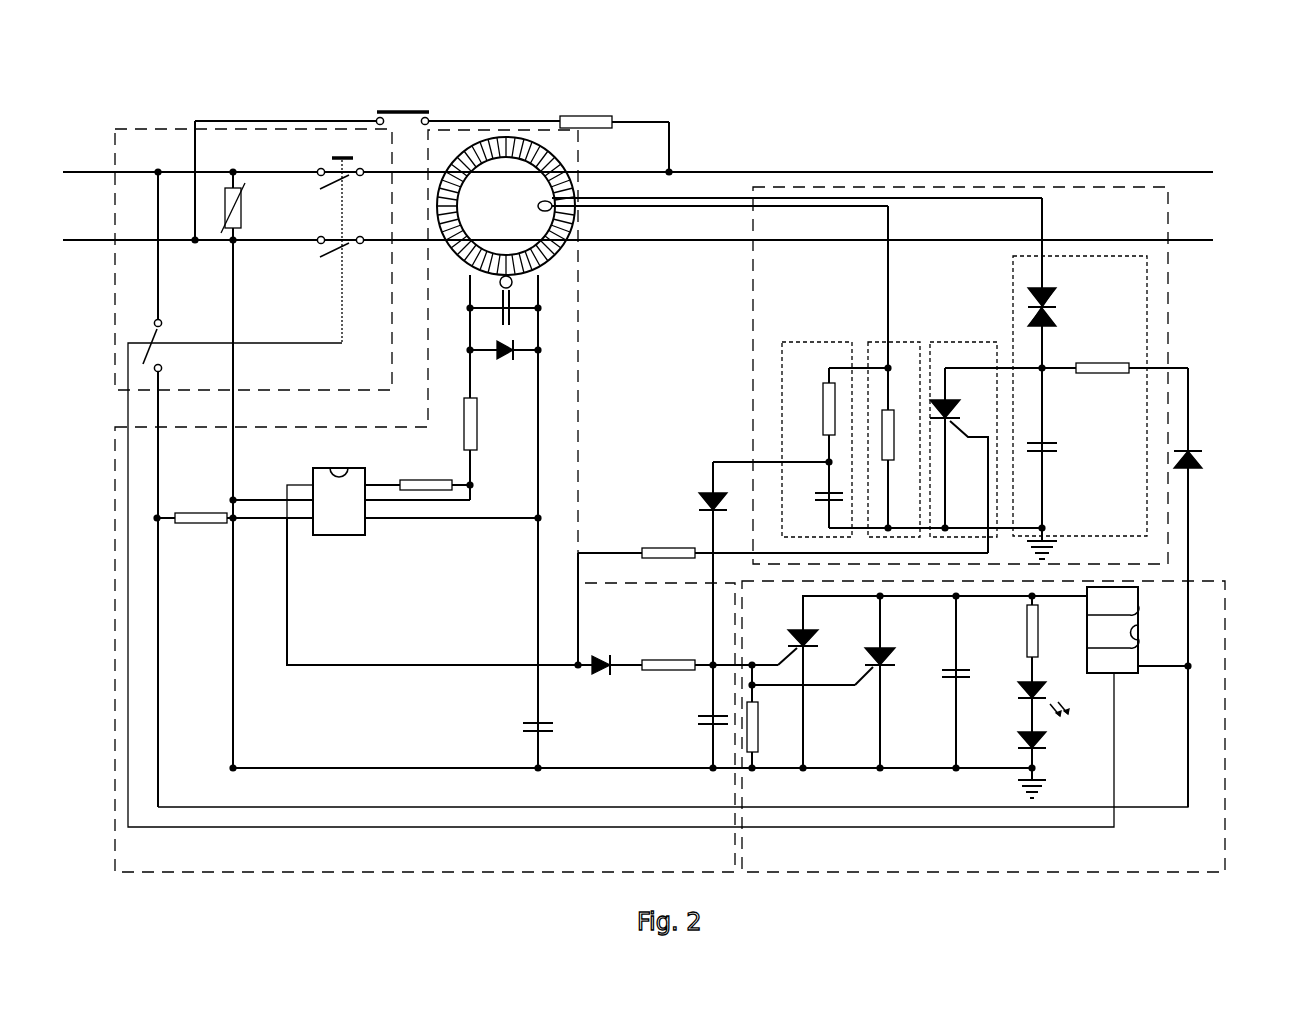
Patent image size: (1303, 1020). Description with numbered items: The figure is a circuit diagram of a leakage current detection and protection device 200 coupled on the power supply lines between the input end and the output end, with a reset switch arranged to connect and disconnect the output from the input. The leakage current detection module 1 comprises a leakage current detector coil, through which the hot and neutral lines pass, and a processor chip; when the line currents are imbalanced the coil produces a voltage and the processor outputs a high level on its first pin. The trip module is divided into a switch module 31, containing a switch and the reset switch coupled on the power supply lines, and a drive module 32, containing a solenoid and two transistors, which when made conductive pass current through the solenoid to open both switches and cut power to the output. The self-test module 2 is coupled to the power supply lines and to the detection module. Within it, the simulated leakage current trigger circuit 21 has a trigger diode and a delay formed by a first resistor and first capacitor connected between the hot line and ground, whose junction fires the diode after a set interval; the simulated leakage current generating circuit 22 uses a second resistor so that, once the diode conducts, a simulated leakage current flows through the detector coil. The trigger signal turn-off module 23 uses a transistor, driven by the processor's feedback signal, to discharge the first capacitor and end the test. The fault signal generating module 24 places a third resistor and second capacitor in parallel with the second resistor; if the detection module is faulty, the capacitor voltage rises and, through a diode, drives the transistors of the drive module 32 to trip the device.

The leakage current detection and protection device 200 is at (1283, 40).
The leakage current detection module 1 is at (503, 134).
The self-test module 2 is at (1130, 187).
The simulated leakage current trigger circuit 21 is at (1098, 256).
The simulated leakage current generating circuit 22 is at (895, 342).
The trigger signal turn-off module 23 is at (962, 342).
The fault signal generating module 24 is at (810, 342).
The switch module 31 is at (255, 130).
The drive module 32 is at (1208, 581).